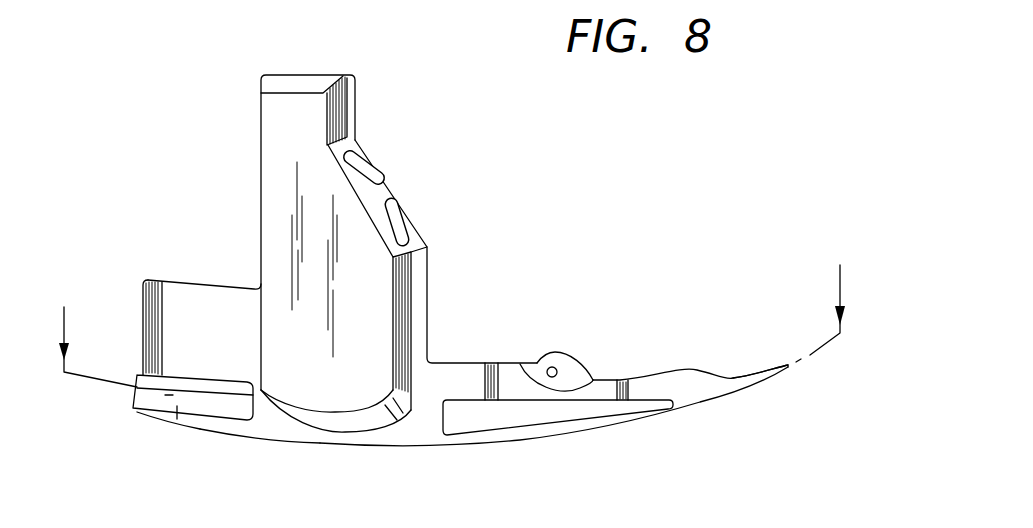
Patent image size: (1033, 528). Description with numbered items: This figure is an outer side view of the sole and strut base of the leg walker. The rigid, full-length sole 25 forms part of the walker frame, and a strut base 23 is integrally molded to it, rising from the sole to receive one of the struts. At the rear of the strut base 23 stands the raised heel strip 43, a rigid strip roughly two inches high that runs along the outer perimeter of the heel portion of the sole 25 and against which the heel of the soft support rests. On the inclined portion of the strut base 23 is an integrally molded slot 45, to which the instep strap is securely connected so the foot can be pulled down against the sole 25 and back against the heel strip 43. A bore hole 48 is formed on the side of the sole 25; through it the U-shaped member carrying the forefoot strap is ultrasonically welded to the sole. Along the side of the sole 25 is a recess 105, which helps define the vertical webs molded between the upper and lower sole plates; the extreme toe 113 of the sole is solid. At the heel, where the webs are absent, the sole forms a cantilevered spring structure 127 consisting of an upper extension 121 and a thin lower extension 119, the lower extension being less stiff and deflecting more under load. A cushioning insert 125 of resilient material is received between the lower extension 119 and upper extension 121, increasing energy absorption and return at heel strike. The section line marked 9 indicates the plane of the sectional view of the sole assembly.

The strut base 23 is at (270, 143).
The raised heel strip 43 is at (192, 293).
The integrally molded slot 45 is at (382, 193).
The bore hole 48 is at (553, 368).
The upper extension 121 is at (173, 377).
The cushioning insert 125 is at (130, 395).
The lower extension 119 is at (137, 418).
The cantilevered spring structure 127 is at (202, 432).
The sole 25 is at (397, 460).
The recess 105 is at (543, 414).
The extreme toe 113 is at (767, 385).
The section line 9- 9 is at (452, 326).